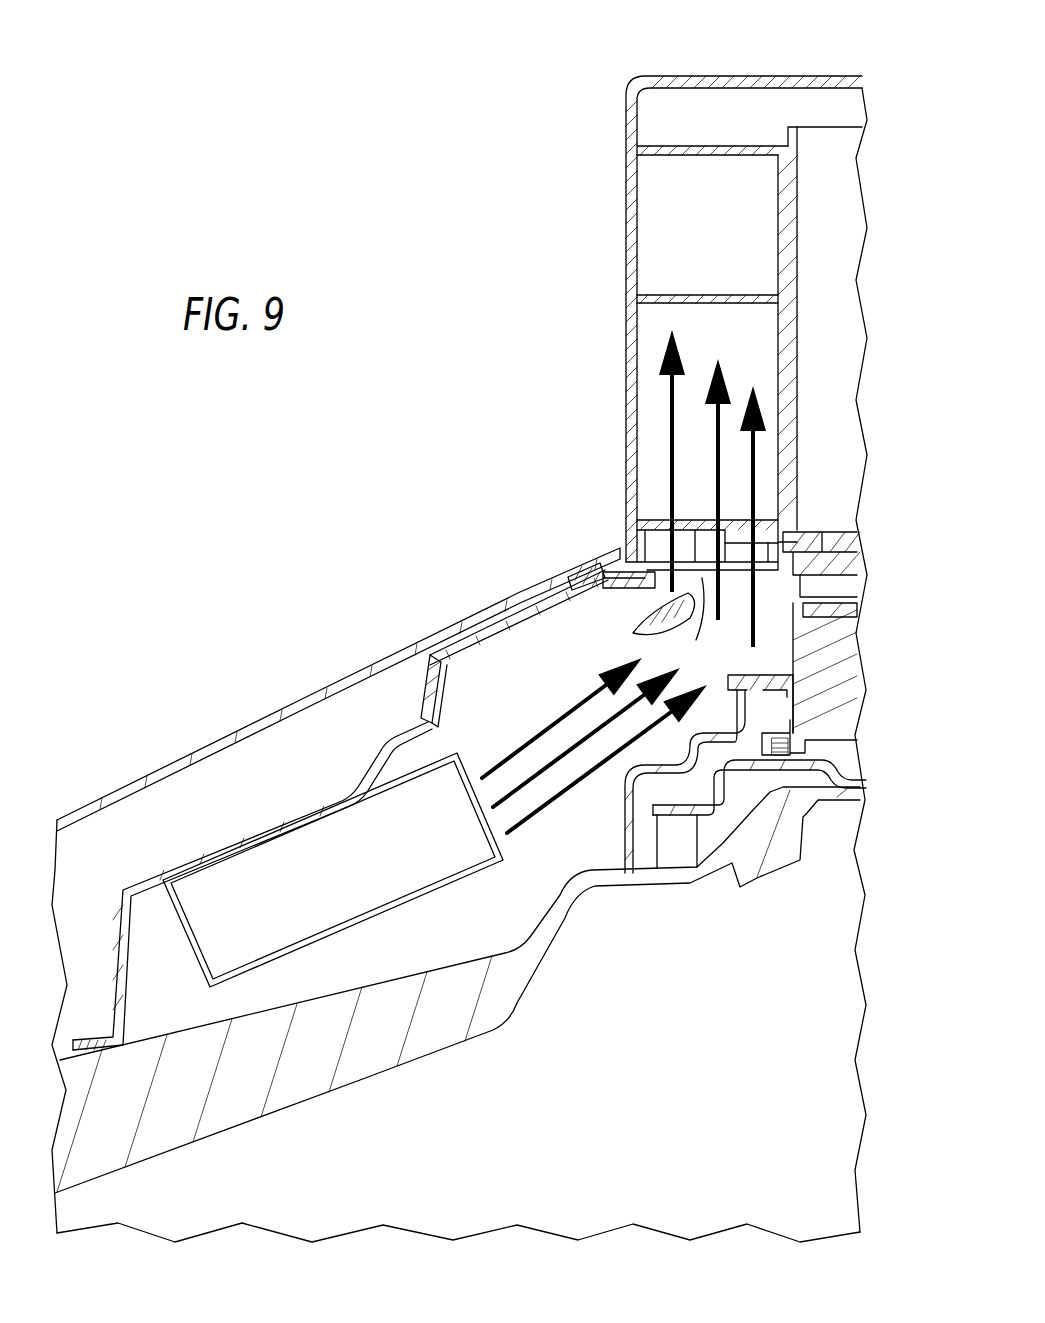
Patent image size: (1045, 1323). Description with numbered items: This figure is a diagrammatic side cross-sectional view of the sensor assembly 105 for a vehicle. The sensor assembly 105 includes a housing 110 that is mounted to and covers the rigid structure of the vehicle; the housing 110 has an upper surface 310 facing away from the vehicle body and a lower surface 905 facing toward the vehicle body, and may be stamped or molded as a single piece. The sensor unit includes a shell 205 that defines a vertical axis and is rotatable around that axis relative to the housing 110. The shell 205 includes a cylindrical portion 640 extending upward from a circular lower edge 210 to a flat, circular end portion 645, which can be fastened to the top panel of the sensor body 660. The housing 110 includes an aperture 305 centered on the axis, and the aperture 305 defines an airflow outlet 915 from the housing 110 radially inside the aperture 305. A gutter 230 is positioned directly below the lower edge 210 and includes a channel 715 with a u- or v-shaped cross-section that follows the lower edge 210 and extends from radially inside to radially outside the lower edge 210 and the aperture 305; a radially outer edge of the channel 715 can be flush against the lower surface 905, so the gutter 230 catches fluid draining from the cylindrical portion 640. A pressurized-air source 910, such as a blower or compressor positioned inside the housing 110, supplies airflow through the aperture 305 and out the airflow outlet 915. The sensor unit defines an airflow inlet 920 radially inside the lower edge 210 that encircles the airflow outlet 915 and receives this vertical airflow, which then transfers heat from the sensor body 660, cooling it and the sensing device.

The sensor assembly 105 is at (372, 143).
The housing 110 is at (243, 728).
The shell 205 is at (697, 73).
The lower edge 210 is at (627, 533).
The gutter 230 is at (518, 630).
The aperture 305 is at (622, 552).
The upper surface 310 is at (378, 655).
The cylindrical portion 640 is at (626, 126).
The end portion 645 is at (738, 77).
The sensor body 660 is at (793, 127).
The channel 715 is at (637, 597).
The lower surface 905 is at (467, 632).
The pressurized-air source 910 is at (400, 905).
The airflow outlet 915 is at (700, 588).
The airflow inlet 920 is at (630, 633).